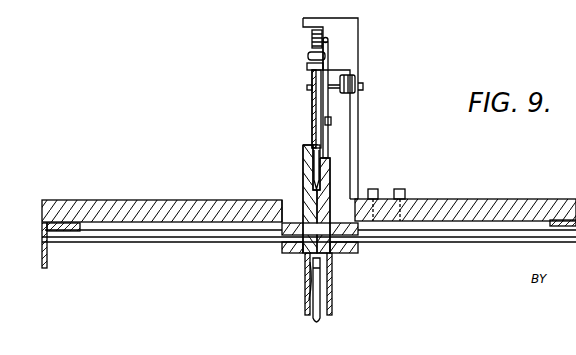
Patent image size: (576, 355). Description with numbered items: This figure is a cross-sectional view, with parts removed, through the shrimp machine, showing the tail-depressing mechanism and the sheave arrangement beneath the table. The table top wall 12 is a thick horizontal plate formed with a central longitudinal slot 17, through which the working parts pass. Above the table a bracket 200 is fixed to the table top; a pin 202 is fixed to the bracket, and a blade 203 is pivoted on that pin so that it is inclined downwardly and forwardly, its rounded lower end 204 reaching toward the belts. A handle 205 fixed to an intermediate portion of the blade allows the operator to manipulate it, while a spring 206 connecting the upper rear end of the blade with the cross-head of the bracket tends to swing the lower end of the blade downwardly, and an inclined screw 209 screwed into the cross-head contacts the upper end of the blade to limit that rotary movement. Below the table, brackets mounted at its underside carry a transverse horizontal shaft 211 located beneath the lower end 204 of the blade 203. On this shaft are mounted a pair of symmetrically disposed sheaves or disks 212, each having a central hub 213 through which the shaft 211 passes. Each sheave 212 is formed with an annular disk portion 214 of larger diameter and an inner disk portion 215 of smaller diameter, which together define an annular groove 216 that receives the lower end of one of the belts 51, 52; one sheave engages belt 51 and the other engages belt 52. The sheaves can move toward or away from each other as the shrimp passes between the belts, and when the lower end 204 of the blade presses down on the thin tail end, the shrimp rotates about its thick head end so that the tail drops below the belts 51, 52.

The table top wall 12 is at (155, 185).
The central longitudinal slot 17 is at (288, 200).
The belt 51 is at (318, 178).
The belt 52 is at (312, 143).
The bracket 200 is at (392, 53).
The pin 202 is at (308, 87).
The blade 203 is at (312, 100).
The lower end of the blade 204 is at (332, 172).
The handle 205 is at (330, 107).
The spring 206 is at (312, 33).
The inclined screw 209 is at (308, 54).
The transverse horizontal shaft 211 is at (187, 243).
The sheave or disk 212 is at (290, 277).
The central hub 213 is at (285, 252).
The annular disk portion 214 is at (303, 162).
The inner disk portion 215 is at (316, 277).
The annular groove 216 is at (308, 298).